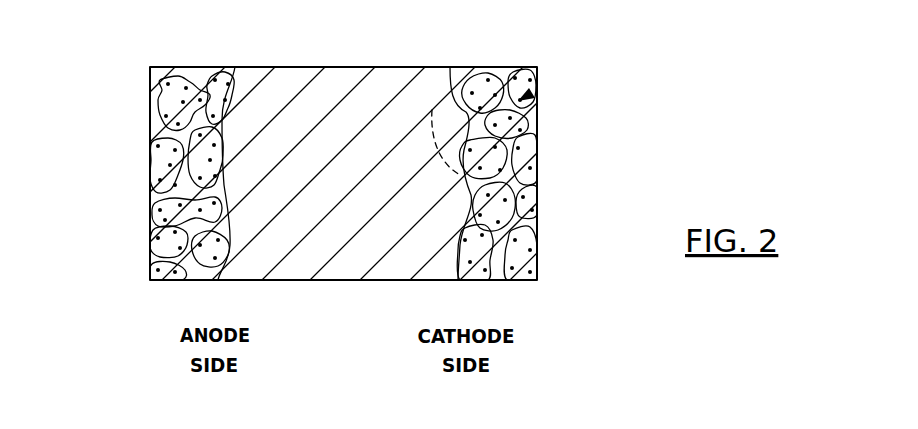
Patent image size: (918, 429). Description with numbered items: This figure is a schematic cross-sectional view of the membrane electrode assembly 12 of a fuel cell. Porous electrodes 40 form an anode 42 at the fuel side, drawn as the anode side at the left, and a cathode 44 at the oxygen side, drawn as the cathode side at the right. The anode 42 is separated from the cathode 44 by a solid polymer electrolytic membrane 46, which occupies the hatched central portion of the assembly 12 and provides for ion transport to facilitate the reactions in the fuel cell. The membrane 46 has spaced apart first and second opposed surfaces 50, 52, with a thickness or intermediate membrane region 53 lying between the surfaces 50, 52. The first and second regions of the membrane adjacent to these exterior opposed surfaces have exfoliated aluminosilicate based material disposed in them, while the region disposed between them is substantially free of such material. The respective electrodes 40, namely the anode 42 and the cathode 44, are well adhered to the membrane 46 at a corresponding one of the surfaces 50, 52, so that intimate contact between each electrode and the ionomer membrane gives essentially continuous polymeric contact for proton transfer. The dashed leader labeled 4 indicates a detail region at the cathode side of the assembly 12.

The assembly 12 is at (361, 195).
The porous electrodes 40 is at (330, 176).
The anode 42 is at (153, 202).
The cathode 44 is at (505, 220).
The solid polymer electrolytic (SPE) membrane 46 is at (338, 67).
The first opposed surface 50 is at (234, 116).
The second opposed surface 52 is at (466, 113).
The intermediate membrane region 53 is at (318, 108).
The detail region 4 is at (540, 83).